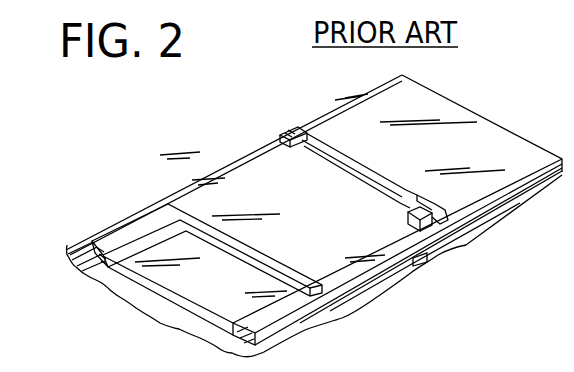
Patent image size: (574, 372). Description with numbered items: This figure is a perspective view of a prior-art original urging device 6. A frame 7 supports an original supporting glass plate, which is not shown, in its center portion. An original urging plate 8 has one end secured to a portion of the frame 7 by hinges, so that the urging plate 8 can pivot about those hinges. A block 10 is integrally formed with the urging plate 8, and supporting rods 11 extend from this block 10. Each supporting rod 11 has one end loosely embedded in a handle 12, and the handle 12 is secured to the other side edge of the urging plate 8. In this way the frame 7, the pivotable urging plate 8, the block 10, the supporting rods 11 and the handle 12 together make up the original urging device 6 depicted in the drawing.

The original urging device 6 is at (259, 134).
The frame 7 is at (161, 213).
The original urging plate 8 is at (490, 133).
The block 10 is at (291, 126).
The supporting rod 11 is at (384, 182).
The handle 12 is at (470, 206).